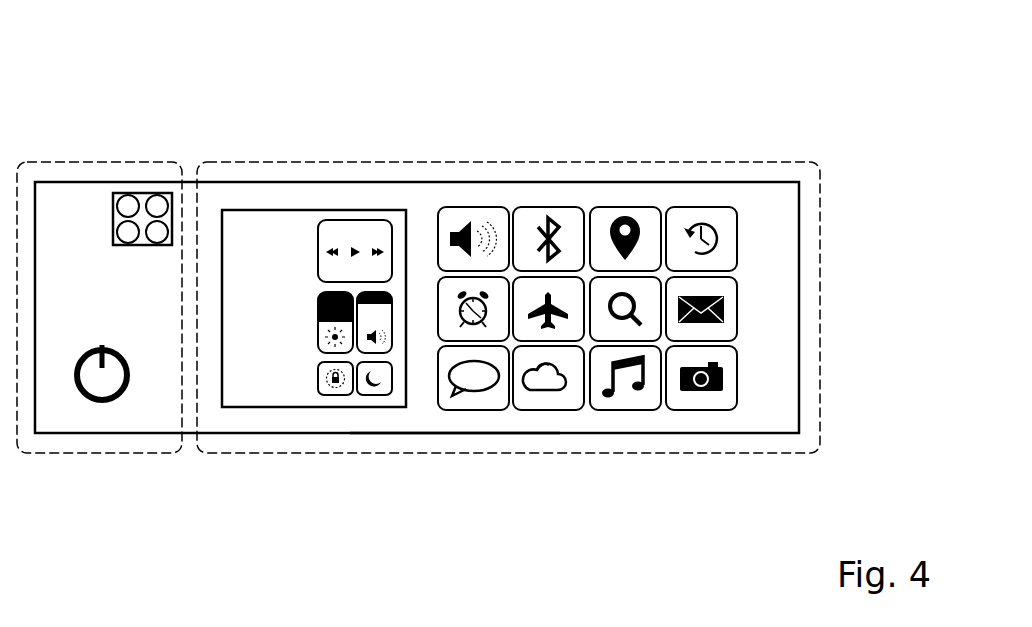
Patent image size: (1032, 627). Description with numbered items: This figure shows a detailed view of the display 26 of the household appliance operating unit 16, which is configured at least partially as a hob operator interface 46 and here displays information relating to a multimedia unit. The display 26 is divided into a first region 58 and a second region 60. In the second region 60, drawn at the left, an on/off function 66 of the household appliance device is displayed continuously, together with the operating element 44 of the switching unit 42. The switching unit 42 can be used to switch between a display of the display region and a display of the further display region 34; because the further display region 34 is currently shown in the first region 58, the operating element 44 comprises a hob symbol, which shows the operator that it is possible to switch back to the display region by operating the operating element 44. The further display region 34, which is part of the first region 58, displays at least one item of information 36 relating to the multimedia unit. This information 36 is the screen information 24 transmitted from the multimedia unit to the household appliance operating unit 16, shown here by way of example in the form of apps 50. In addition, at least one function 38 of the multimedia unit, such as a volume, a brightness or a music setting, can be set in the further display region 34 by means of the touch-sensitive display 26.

The household appliance operating unit 16 is at (603, 176).
The screen information 24 is at (675, 168).
The display 26 is at (440, 182).
The further display region 34 is at (425, 442).
The information relating to the multimedia unit 36 is at (508, 442).
The function of the multimedia unit 38 is at (296, 252).
The switching unit 42 is at (162, 166).
The operating element 44 is at (145, 191).
The hob operator interface 46 is at (717, 435).
The apps 50 is at (721, 212).
The first region 58 is at (250, 455).
The second region 60 is at (160, 455).
The on/off function 66 is at (95, 404).